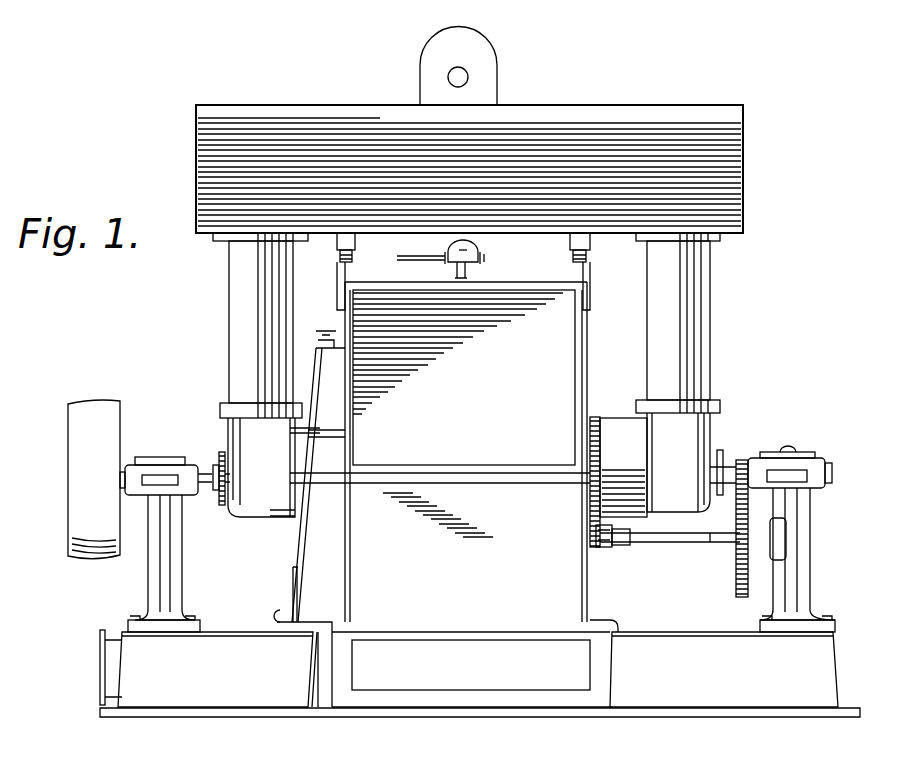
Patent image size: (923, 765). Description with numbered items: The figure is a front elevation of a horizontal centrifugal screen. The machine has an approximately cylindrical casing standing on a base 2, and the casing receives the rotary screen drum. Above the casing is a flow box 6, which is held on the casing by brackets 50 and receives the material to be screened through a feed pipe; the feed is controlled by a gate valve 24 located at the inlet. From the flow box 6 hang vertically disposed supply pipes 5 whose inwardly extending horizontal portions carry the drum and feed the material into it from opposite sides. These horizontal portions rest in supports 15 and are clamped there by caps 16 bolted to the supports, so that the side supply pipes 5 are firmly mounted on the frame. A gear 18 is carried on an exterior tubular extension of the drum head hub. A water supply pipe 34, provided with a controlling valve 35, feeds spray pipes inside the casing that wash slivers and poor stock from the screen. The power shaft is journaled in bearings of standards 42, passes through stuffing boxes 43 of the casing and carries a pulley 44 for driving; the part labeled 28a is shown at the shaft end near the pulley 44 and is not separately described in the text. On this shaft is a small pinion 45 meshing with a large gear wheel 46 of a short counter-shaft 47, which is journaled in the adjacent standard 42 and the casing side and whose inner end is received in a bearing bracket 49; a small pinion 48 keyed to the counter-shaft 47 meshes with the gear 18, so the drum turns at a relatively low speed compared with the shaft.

The base 2 is at (480, 668).
The supply pipes 5 is at (245, 312).
The flow box 6 is at (258, 112).
The supports 15 is at (640, 510).
The caps 16 is at (625, 445).
The gear 18 is at (598, 425).
The gate valve 24 is at (478, 58).
The gear 28a is at (217, 497).
The water supply pipe 34 is at (470, 273).
The controlling valve 35 is at (463, 255).
The standards 42 is at (155, 548).
The stuffing boxes 43 is at (727, 453).
The pulley 44 is at (92, 428).
The pinion 45 is at (750, 465).
The gear wheel 46 is at (745, 577).
The counter-shaft 47 is at (715, 540).
The pinion 48 is at (600, 548).
The bearing bracket 49 is at (612, 552).
The brackets 50 is at (338, 262).